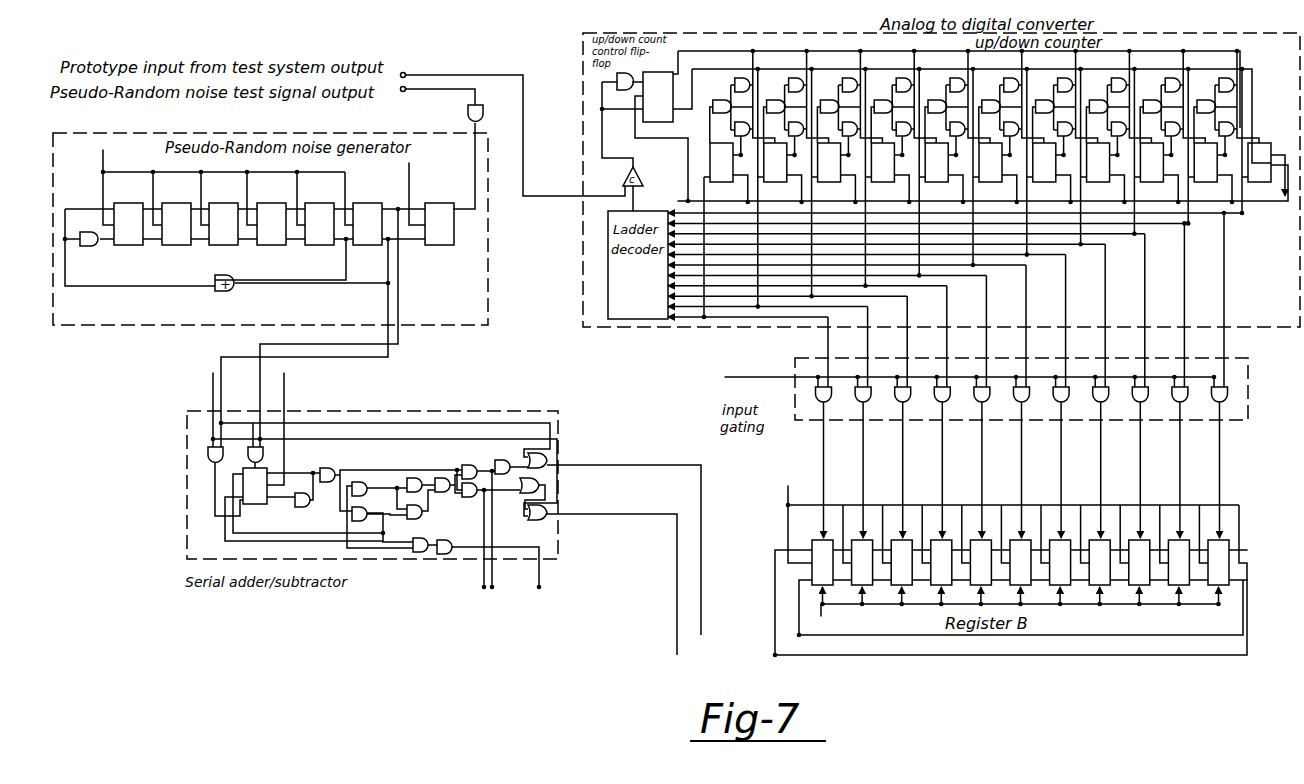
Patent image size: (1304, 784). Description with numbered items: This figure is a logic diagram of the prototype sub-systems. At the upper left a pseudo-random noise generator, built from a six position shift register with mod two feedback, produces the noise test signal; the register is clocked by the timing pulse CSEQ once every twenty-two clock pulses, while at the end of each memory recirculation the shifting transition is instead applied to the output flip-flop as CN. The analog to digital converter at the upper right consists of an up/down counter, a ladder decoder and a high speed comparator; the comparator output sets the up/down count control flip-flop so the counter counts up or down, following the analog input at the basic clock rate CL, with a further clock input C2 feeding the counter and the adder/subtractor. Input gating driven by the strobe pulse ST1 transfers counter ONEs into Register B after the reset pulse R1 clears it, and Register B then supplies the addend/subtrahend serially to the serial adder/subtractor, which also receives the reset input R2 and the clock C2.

The timing pulse CSEQ is at (120, 184).
The noise generator output clock CN is at (420, 187).
The clock input C2 is at (777, 325).
The reset input R2 is at (191, 367).
The strobe pulse ST1 is at (951, 379).
The basic clock CL is at (1013, 519).
The reset pulse R1 is at (1019, 618).